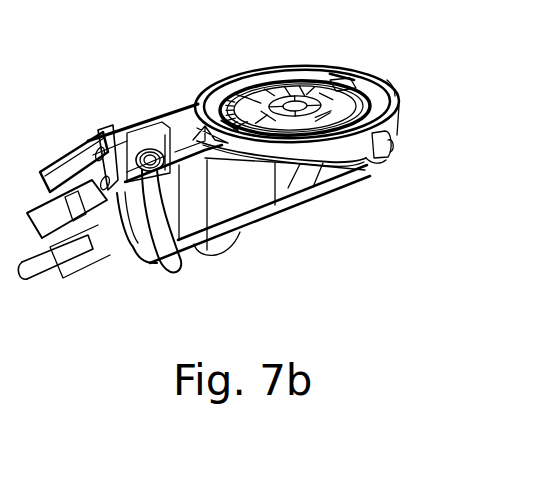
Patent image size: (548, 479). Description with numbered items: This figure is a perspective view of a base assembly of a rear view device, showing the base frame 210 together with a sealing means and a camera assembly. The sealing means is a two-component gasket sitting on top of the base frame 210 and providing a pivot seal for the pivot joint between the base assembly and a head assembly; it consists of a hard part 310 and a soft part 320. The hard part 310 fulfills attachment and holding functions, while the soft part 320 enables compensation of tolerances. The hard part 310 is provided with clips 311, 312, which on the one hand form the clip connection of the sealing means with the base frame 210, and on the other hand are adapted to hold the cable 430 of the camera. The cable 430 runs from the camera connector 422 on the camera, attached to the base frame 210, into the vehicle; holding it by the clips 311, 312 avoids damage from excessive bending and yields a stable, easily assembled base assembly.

The base frame 210 is at (257, 213).
The hard part 310 is at (373, 93).
The clip 311 is at (371, 156).
The clip 312 is at (345, 78).
The soft part 320 is at (388, 88).
The camera connector 422 is at (143, 132).
The cable 430 is at (181, 270).